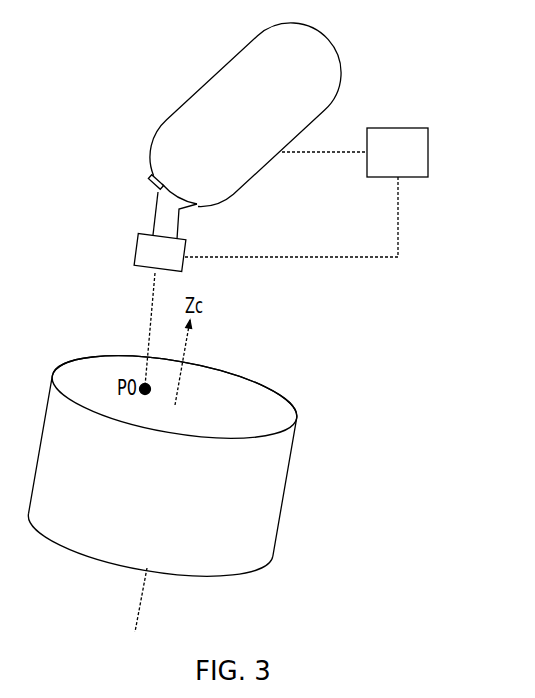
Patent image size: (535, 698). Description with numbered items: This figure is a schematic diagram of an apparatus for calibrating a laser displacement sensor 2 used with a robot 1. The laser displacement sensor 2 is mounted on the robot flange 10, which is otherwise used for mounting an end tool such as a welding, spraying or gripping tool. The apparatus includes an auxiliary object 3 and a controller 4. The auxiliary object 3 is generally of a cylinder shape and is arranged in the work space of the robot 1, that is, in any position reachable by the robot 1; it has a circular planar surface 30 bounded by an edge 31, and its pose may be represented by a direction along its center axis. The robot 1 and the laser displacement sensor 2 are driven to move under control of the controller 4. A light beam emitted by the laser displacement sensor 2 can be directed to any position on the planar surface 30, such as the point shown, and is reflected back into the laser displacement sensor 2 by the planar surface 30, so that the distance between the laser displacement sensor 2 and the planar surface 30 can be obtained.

The robot 1 is at (217, 97).
The robot flange 10 is at (158, 180).
The laser displacement sensor 2 is at (145, 250).
The controller 4 is at (383, 138).
The auxiliary object 3 is at (80, 435).
The planar surface 30 is at (88, 388).
The edge 31 is at (118, 362).